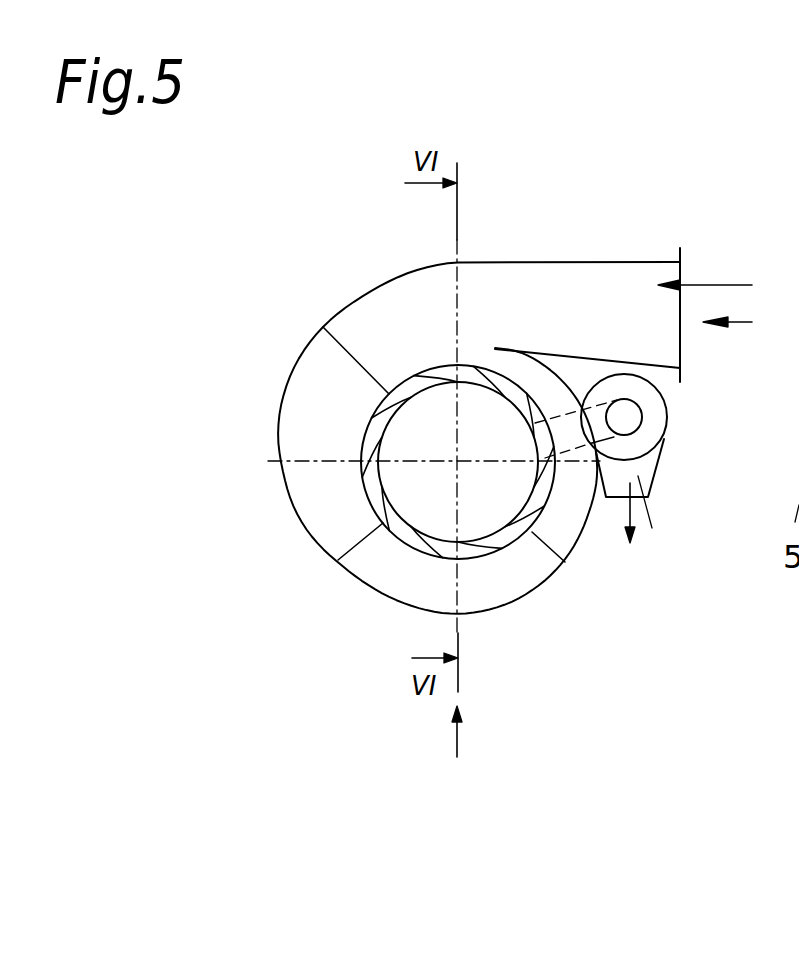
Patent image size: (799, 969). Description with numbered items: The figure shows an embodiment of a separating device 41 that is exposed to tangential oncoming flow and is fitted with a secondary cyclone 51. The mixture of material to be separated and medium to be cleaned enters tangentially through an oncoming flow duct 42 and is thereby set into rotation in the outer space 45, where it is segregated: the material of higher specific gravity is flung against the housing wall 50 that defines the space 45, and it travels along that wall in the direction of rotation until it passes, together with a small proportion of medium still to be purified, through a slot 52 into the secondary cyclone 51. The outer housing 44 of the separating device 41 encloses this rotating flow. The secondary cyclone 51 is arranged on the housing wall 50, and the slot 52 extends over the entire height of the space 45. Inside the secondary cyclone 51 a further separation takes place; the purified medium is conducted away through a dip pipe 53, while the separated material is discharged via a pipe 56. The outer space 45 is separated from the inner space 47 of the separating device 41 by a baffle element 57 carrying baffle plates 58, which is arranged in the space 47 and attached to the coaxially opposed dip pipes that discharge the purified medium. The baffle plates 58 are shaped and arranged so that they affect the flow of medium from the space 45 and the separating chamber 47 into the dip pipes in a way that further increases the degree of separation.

The separating device 41 is at (458, 752).
The oncoming flow duct 42 is at (728, 311).
The blower housing (volute) 44 is at (300, 358).
The space 45 is at (337, 527).
The space 47 is at (488, 425).
The housing wall 50 is at (542, 588).
The secondary cyclone 51 is at (673, 437).
The slot 52 is at (596, 466).
The dip pipe 53 is at (626, 418).
The pipe 56 is at (652, 528).
The baffle element 57 is at (362, 482).
The baffle plates 58 is at (383, 405).